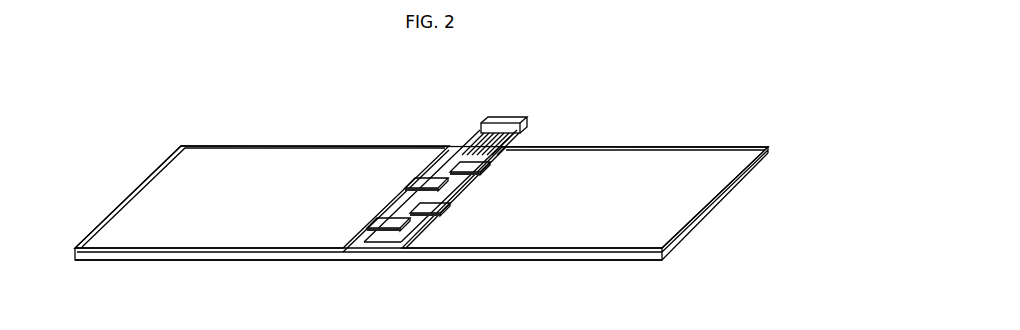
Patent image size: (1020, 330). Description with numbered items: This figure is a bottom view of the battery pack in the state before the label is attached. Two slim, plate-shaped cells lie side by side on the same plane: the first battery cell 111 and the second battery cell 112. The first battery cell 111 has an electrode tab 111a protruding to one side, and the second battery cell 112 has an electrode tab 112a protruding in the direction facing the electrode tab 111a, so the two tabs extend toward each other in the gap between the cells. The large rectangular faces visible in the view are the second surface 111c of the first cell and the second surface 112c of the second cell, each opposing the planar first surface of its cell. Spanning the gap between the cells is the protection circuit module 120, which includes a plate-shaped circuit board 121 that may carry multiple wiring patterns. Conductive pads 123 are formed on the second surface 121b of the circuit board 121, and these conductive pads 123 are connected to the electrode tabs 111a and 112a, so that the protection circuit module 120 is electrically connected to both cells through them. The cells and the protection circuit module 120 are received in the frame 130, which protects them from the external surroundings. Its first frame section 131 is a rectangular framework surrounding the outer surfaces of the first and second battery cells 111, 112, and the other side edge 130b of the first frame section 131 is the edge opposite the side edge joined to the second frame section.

The first battery cell 111 is at (300, 169).
The electrode tab 111a is at (378, 225).
The second surface 111c is at (238, 163).
The second battery cell 112 is at (592, 169).
The electrode tab 112a is at (430, 205).
The second surface 112c is at (675, 162).
The protection circuit module 120 is at (506, 116).
The circuit board 121 is at (365, 238).
The second surface 121b is at (372, 237).
The conductive pads 123 is at (423, 216).
The frame 130 is at (718, 205).
The other side edge 130b is at (528, 250).
The first frame section 131 is at (585, 260).